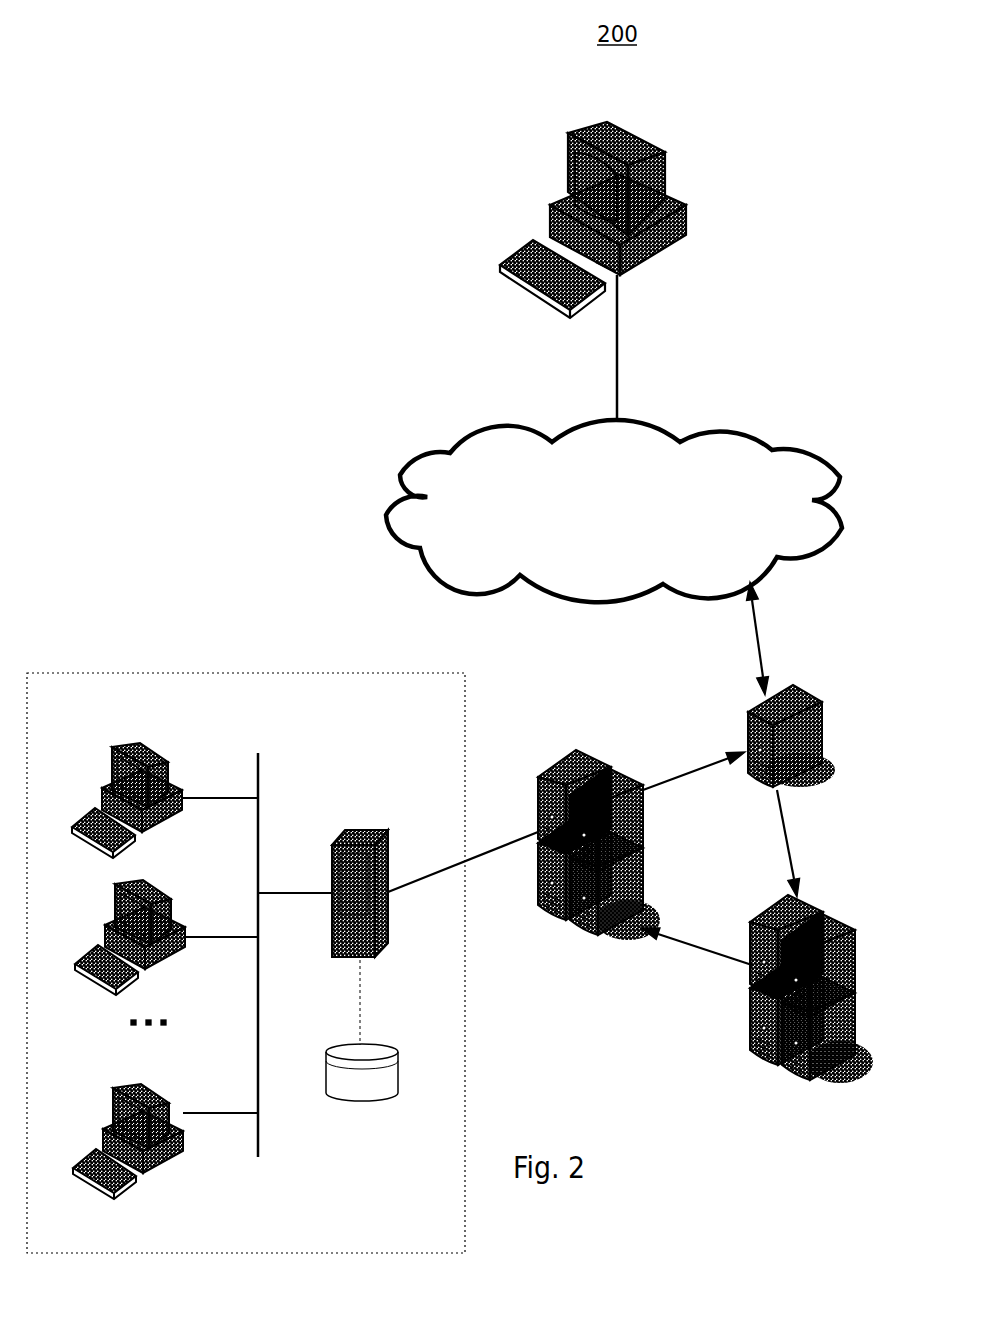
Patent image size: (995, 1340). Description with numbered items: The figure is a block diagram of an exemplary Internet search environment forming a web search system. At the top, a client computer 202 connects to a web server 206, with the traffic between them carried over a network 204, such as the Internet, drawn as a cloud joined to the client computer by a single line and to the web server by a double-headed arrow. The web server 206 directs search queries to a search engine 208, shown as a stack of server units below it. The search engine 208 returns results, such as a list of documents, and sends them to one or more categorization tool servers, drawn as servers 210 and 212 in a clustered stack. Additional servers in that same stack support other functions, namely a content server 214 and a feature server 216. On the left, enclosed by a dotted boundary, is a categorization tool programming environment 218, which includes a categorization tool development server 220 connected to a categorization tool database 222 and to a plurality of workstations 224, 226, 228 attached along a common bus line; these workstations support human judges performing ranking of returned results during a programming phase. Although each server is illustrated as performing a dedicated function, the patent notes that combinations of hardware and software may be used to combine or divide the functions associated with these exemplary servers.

The client computer 202 is at (667, 183).
The network 204 is at (842, 478).
The web server 206 is at (822, 713).
The search engine 208 is at (858, 945).
The categorization tool server 210 is at (537, 792).
The categorization tool server 212 is at (632, 775).
The content server 214 is at (587, 940).
The feature server 216 is at (532, 877).
The categorization tool programming environment 218 is at (252, 670).
The categorization tool development server 220 is at (332, 847).
The categorization tool database 222 is at (400, 1068).
The workstation 224 is at (170, 780).
The workstation 226 is at (173, 915).
The workstation 228 is at (143, 1090).